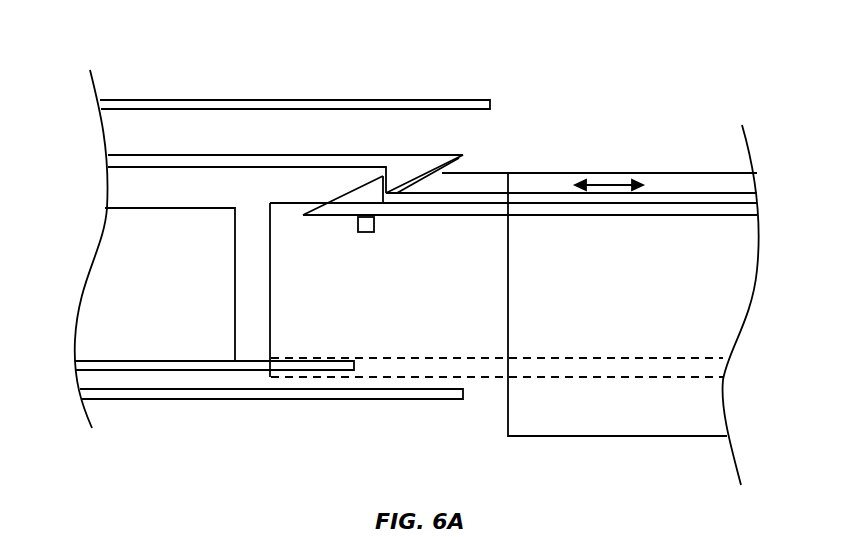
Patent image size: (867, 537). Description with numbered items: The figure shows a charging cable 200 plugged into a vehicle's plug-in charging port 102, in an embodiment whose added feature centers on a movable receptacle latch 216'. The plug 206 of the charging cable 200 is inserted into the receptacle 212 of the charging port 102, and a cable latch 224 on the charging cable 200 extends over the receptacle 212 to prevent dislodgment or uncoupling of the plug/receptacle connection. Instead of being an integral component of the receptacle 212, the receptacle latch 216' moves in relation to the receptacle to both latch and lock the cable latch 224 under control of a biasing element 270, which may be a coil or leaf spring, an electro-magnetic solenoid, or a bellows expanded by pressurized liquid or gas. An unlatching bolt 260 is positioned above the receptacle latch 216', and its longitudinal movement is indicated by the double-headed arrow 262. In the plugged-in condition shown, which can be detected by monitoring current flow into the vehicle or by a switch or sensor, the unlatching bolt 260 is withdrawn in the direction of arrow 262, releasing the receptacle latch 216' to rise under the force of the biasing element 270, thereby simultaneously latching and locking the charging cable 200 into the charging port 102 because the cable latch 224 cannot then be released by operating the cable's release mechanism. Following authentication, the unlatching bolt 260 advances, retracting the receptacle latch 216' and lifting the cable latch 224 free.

The charging cable 200 is at (200, 65).
The plug-in charging port 102 is at (721, 133).
The cable latch 224 is at (183, 155).
The plug 206 is at (88, 307).
The receptacle 212 is at (407, 300).
The receptacle latch 216' is at (513, 226).
The biasing element 270 is at (358, 223).
The unlatching bolt 260 is at (539, 183).
The unlatching bolt motion 262 is at (616, 182).